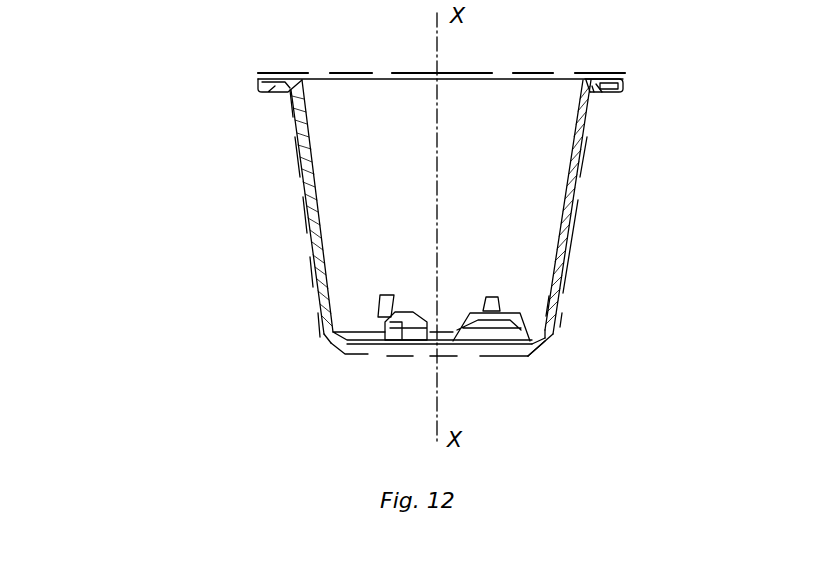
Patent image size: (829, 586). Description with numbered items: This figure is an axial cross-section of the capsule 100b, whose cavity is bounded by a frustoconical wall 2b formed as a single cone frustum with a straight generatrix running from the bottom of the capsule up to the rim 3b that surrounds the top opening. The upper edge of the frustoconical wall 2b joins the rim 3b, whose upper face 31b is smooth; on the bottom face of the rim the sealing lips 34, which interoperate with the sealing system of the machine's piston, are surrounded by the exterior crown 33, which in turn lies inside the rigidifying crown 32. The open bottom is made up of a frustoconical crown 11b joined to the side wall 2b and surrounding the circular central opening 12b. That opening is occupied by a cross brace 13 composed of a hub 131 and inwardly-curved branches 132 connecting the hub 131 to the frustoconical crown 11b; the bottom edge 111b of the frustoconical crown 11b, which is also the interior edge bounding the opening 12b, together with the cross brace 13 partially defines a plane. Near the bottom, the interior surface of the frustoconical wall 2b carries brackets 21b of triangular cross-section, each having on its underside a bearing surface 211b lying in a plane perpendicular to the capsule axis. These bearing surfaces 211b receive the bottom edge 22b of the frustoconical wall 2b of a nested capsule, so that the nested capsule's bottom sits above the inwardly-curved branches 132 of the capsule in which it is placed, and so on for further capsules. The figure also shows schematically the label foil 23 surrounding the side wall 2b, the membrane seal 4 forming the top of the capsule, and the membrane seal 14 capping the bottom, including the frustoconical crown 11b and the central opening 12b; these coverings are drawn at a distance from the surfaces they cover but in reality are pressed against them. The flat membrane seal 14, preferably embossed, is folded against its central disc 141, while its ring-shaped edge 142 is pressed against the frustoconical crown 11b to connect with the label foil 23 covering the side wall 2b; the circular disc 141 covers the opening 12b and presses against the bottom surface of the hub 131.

The capsule 100b is at (185, 132).
The membrane seal 4 is at (340, 72).
The upper face 31b is at (632, 76).
The exterior crown 33 is at (623, 92).
The sealing lips 34 is at (602, 93).
The rigidifying crown 32 is at (595, 97).
The rim 3b is at (703, 102).
The label foil 23 is at (305, 225).
The frustoconical wall 2b is at (540, 212).
The bearing surface 211b is at (541, 288).
The brackets 21b is at (552, 305).
The central opening 12b is at (405, 346).
The cross brace 13 is at (590, 415).
The hub 131 is at (453, 353).
The branches 132 is at (508, 347).
The bottom edge 22b is at (533, 327).
The membrane seal 14 is at (322, 432).
The frustoconical crown 11b is at (330, 343).
The central disc 141 is at (332, 352).
The ring-shaped edge 142 is at (363, 356).
The bottom edge 111b is at (527, 357).